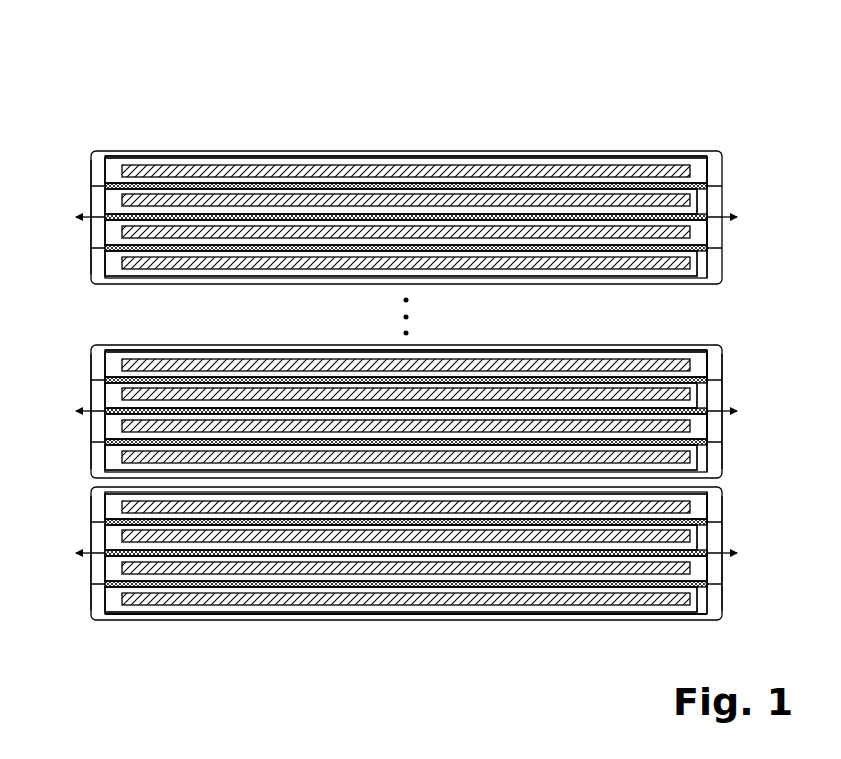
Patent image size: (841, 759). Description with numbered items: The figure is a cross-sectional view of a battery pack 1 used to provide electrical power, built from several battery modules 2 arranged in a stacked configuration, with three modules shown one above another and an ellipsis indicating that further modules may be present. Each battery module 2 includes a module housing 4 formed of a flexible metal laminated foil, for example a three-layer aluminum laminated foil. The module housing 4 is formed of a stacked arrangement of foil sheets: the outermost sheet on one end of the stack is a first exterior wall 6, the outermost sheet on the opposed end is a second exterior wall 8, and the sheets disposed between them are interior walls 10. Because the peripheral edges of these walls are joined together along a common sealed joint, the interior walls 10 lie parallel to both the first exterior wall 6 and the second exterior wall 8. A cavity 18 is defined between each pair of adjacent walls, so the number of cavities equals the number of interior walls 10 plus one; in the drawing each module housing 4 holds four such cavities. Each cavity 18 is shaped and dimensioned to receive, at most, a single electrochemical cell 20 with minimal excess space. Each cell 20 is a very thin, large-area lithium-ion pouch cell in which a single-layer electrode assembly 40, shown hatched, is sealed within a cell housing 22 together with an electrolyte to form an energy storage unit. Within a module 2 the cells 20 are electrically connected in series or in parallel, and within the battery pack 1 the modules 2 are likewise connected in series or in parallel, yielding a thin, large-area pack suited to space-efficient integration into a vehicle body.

The battery pack 1 is at (206, 86).
The battery module 2 is at (380, 152).
The module housing 4 is at (299, 152).
The first exterior wall 6 is at (252, 152).
The second exterior wall 8 is at (685, 287).
The interior walls 10 is at (91, 248).
The cavity 18 is at (122, 153).
The electrochemical cell 20 is at (652, 158).
The cell housing 22 is at (714, 165).
The electrode assembly 40 is at (468, 172).